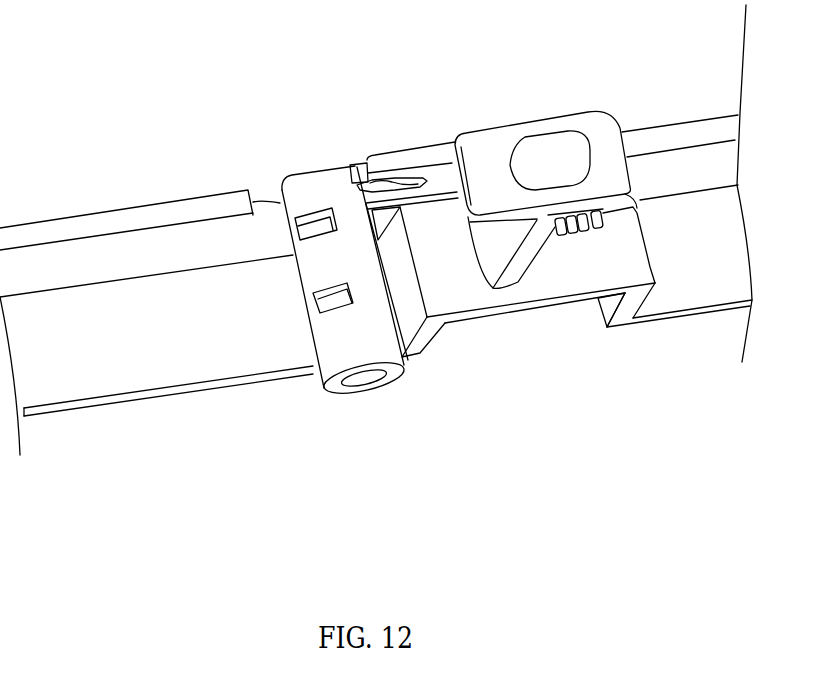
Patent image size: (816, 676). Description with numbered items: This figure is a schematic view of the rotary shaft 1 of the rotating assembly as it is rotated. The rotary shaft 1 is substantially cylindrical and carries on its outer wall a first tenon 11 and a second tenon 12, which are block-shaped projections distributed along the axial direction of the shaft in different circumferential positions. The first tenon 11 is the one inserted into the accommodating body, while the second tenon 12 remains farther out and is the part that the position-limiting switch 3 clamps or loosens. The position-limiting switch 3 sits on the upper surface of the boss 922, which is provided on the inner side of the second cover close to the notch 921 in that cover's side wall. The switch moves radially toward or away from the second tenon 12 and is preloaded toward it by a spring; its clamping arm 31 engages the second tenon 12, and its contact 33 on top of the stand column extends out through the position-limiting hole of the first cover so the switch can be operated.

The rotary shaft 1 is at (353, 353).
The first tenon 11 is at (328, 297).
The second tenon 12 is at (352, 167).
The position-limiting switch 3 is at (608, 113).
The clamping arm 31 is at (432, 150).
The contact 33 is at (547, 150).
The notch 921 is at (258, 207).
The boss 922 is at (578, 298).